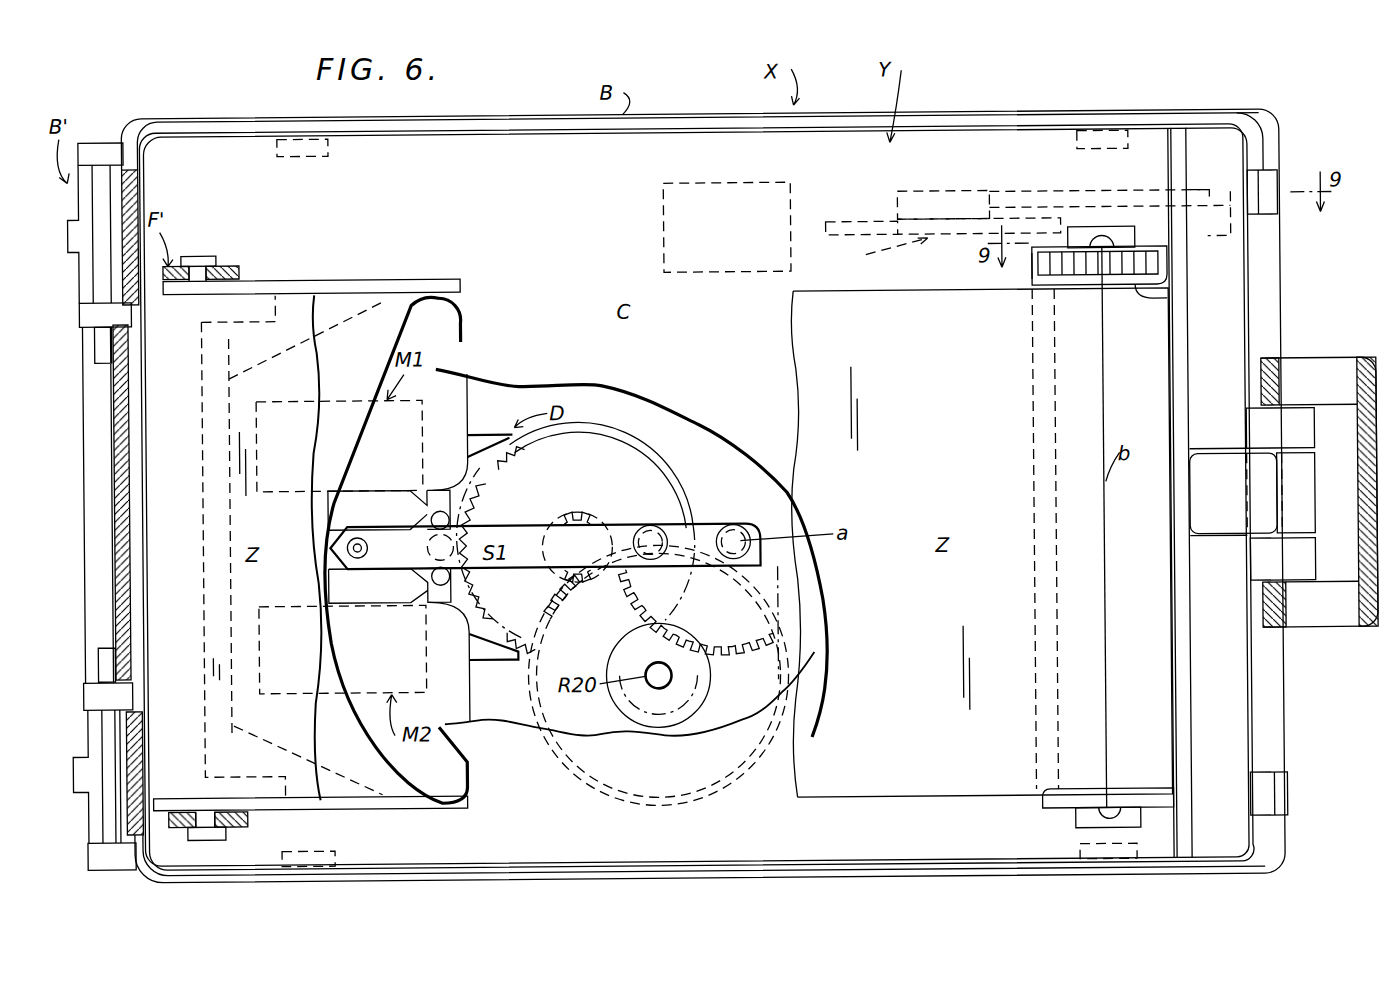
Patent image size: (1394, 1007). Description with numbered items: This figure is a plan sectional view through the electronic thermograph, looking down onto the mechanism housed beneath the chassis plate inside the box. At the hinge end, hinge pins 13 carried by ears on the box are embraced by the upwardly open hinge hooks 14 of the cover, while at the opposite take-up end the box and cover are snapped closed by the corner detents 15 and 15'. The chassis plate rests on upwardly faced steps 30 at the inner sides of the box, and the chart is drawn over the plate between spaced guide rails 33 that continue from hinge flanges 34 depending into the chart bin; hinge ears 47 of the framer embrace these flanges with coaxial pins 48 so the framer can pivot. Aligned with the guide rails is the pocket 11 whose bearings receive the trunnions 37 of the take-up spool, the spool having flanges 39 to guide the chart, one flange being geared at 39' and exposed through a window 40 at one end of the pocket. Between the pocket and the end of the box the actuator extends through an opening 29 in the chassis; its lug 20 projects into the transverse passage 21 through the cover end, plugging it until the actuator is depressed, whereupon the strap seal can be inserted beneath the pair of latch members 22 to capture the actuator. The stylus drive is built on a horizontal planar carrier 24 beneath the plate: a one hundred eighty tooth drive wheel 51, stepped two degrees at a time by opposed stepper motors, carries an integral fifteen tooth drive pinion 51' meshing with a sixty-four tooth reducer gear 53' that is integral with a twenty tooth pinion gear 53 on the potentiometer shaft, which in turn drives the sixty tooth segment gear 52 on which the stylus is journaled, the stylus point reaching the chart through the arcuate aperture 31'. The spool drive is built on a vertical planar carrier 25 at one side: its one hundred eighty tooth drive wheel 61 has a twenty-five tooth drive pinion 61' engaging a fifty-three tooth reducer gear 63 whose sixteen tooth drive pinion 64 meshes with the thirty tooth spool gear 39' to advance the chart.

The pocket 11 is at (1181, 690).
The hinge pins 13 is at (100, 278).
The hinge hooks 14 is at (88, 872).
The corner detent 15 is at (1287, 793).
The corner detent 15' is at (1285, 176).
The lug 20 is at (1300, 500).
The transverse passage 21 is at (1312, 492).
The latch members 22 is at (1280, 494).
The carrier 24 is at (632, 553).
The carrier 25 is at (881, 252).
The opening 29 is at (1230, 540).
The steps 30 is at (300, 153).
The arcuate aperture 31' is at (397, 550).
The guide rails 33 is at (352, 277).
The hinge flanges 34 is at (232, 262).
The trunnions 37 is at (1110, 240).
The flanges 39 is at (1134, 545).
The spool gear 39' is at (993, 270).
The window 40 is at (1168, 262).
The hinge ears 47 is at (176, 276).
The coaxial pins 48 is at (195, 252).
The drive wheel 51 is at (575, 521).
The drive pinion 51' is at (577, 531).
The segment gear 52 is at (772, 642).
The pinion gear 53 is at (658, 675).
The reducer gear 53' is at (540, 597).
The drive wheel 61 is at (857, 206).
The drive pinion 61' is at (924, 191).
The reducer gear 63 is at (1033, 193).
The drive pinion 64 is at (1140, 222).